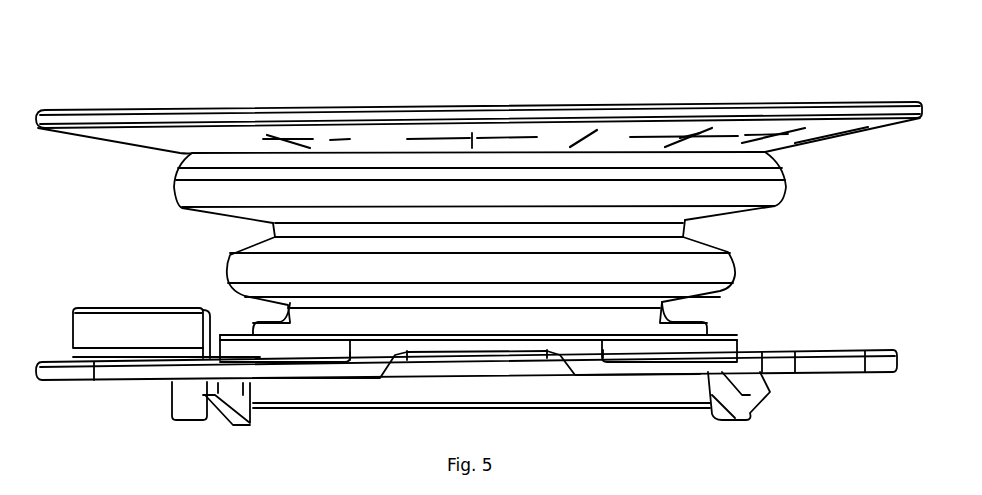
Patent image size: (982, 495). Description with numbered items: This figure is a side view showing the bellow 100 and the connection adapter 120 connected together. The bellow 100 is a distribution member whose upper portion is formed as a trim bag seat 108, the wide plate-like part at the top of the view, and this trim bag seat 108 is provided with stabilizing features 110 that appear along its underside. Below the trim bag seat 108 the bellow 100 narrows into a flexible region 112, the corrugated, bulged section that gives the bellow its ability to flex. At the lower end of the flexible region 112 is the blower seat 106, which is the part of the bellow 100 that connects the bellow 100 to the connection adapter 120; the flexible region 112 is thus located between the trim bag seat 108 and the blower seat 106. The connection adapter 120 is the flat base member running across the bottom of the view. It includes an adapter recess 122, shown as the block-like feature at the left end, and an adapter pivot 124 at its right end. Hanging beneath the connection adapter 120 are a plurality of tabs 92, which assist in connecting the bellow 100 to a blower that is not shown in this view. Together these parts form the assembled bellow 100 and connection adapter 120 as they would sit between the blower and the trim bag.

The bellow 100 is at (103, 125).
The trim bag seat 108 is at (790, 101).
The stabilizing features 110 is at (387, 148).
The flexible region 112 is at (768, 346).
The adapter recess 122 is at (97, 308).
The connection adapter 120 is at (123, 383).
The adapter pivot 124 is at (873, 372).
The blower seat 106 is at (593, 402).
The tabs 92 is at (747, 417).